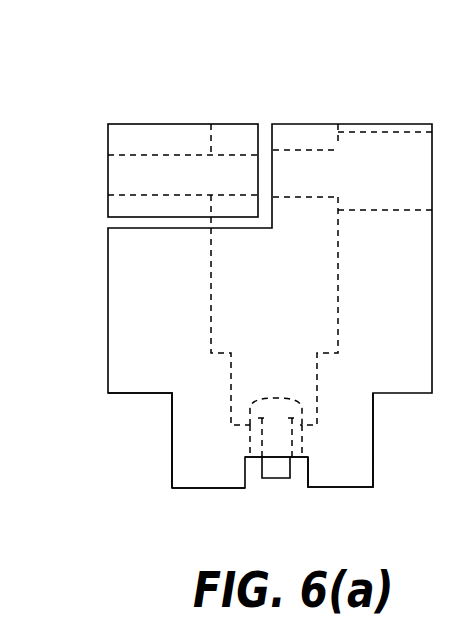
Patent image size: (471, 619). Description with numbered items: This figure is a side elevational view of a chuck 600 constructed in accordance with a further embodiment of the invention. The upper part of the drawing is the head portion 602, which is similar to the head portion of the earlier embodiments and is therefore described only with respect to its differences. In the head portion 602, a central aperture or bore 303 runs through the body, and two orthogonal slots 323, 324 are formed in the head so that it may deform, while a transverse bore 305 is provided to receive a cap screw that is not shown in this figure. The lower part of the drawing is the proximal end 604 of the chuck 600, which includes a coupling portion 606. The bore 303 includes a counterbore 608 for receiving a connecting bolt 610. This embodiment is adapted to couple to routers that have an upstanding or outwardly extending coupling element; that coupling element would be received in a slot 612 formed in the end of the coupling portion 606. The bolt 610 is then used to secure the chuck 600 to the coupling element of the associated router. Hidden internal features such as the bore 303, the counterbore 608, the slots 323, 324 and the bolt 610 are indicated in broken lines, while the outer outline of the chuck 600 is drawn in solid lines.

The chuck 600 is at (395, 100).
The transverse bore 305 is at (140, 156).
The orthogonal slot 323 is at (160, 229).
The orthogonal slot 324 is at (274, 137).
The central bore 303 is at (338, 285).
The head portion 602 is at (125, 320).
The proximal end 604 is at (158, 433).
The coupling portion 606 is at (183, 465).
The counterbore 608 is at (318, 403).
The connecting bolt 610 is at (282, 398).
The slot 612 is at (307, 480).